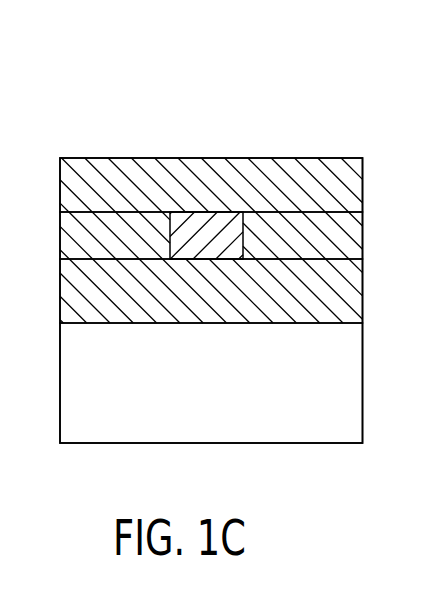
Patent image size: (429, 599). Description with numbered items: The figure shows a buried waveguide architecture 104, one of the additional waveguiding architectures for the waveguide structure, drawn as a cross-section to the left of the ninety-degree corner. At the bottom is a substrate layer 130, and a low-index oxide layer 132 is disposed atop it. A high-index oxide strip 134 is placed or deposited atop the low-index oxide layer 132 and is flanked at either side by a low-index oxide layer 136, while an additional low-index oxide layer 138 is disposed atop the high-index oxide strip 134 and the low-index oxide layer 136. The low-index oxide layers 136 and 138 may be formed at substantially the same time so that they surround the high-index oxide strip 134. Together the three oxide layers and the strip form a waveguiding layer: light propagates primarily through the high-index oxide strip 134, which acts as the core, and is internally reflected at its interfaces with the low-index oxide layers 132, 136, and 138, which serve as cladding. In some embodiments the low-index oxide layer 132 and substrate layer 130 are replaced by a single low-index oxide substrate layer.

The waveguiding architecture 104 is at (70, 106).
The substrate layer 130 is at (347, 380).
The low-index oxide layer 132 is at (348, 297).
The high-index oxide strip 134 is at (188, 215).
The low-index oxide layer 136 is at (108, 216).
The additional low-index oxide layer 138 is at (312, 165).